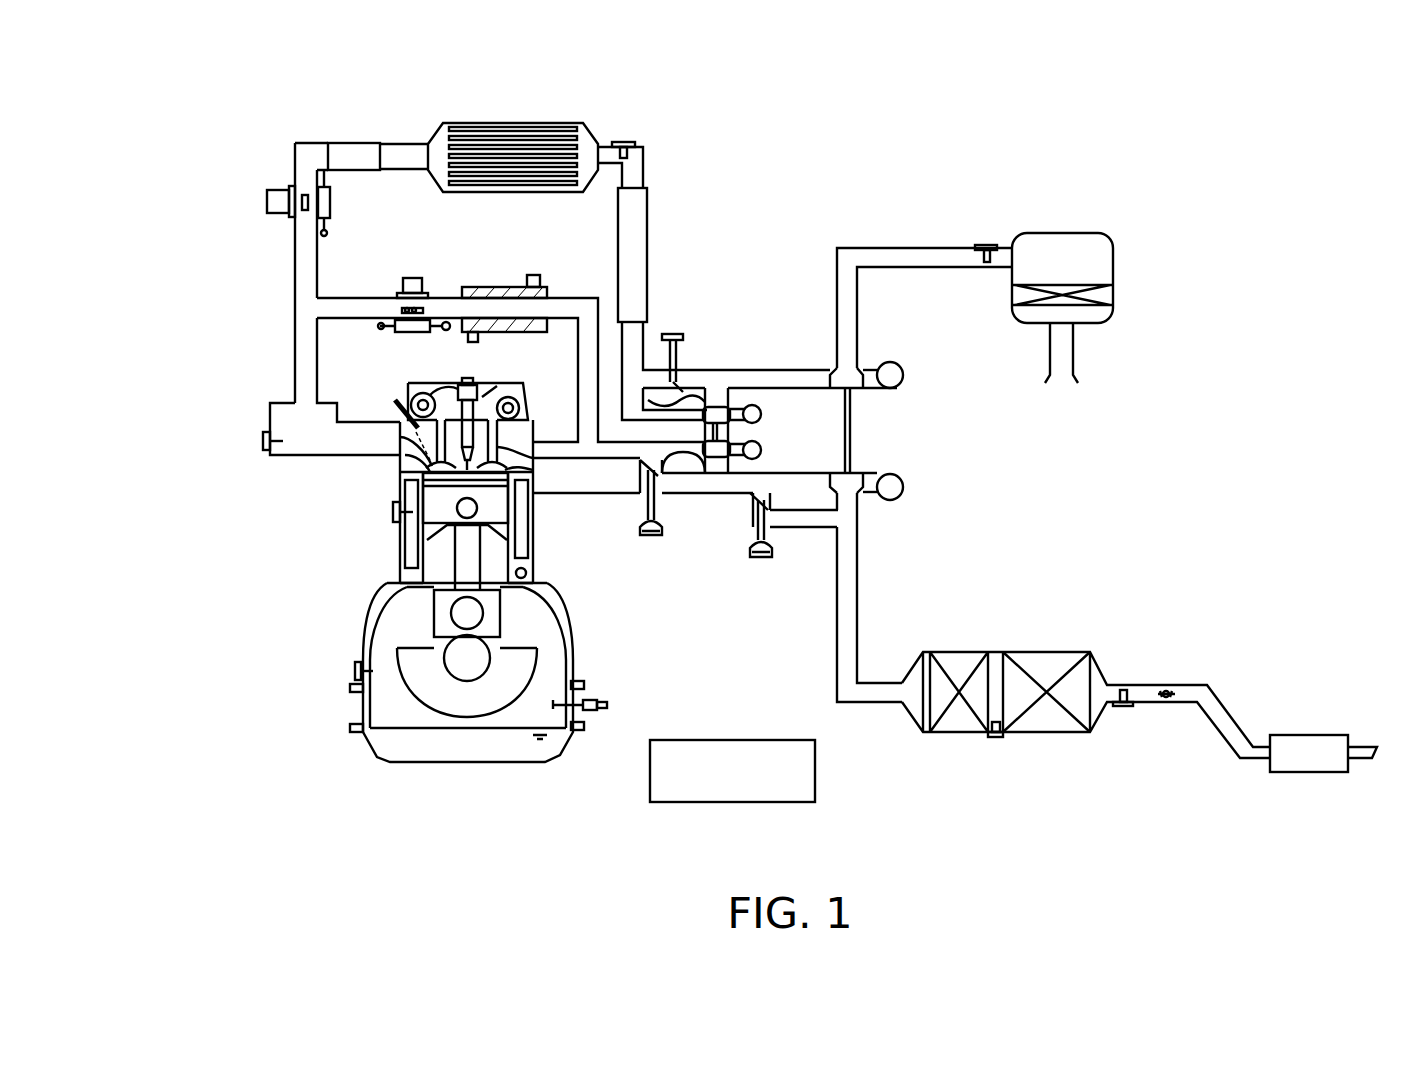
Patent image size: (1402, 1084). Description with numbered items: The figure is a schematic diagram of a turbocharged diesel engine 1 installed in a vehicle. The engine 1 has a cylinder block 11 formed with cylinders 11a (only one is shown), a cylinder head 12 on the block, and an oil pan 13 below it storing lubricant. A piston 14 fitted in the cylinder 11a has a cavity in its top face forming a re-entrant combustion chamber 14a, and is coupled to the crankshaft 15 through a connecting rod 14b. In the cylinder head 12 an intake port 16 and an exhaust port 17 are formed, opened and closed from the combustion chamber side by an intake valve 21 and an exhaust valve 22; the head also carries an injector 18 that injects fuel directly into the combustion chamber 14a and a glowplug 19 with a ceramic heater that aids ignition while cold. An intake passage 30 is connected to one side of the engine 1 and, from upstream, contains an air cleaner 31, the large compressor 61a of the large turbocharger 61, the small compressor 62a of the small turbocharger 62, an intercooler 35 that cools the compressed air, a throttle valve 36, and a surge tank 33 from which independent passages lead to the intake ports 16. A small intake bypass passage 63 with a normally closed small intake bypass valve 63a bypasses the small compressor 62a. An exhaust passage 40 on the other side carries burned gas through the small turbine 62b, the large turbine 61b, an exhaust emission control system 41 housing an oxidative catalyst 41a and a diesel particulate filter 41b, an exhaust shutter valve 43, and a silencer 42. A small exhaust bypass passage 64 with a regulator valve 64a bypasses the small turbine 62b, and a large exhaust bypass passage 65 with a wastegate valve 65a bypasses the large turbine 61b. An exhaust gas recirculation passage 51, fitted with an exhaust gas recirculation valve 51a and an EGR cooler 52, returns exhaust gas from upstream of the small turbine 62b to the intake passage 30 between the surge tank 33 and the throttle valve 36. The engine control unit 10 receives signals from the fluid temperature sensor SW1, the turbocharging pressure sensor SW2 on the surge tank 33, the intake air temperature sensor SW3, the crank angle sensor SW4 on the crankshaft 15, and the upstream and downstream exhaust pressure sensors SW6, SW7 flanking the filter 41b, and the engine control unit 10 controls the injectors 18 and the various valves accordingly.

The engine 1 is at (300, 732).
The engine control unit (ECU) 10 is at (684, 808).
The cylinder block 11 is at (535, 528).
The cylinder 11a is at (503, 556).
The cylinder head 12 is at (540, 428).
The oil pan 13 is at (478, 764).
The piston 14 is at (427, 540).
The combustion chamber 14a is at (495, 495).
The connecting rod 14b is at (452, 565).
The crankshaft 15 is at (455, 683).
The intake port 16 is at (400, 447).
The exhaust port 17 is at (527, 448).
The injector 18 is at (465, 378).
The glowplug 19 is at (398, 397).
The intake valve 21 is at (428, 473).
The exhaust valve 22 is at (510, 466).
The intake passage 30 is at (298, 330).
The air cleaner 31 is at (1080, 233).
The surge tank 33 is at (291, 458).
The intercooler 35 is at (506, 123).
The throttle valve 36 is at (304, 192).
The exhaust passage 40 is at (837, 646).
The exhaust emission control system 41 is at (1069, 596).
The oxidative catalyst 41a is at (965, 663).
The diesel particulate filter (DPF) 41b is at (1043, 663).
The silencer 42 is at (1310, 735).
The exhaust shutter valve 43 is at (1167, 690).
The exhaust gas recirculation passage 51 is at (515, 333).
The exhaust gas recirculation valve 51a is at (425, 310).
The EGR cooler 52 is at (497, 287).
The large turbocharger 61 is at (979, 398).
The large compressor 61a is at (858, 380).
The large turbine 61b is at (860, 484).
The small turbocharger 62 is at (845, 216).
The small compressor 62a is at (722, 412).
The small turbine 62b is at (735, 447).
The small intake bypass passage 63 is at (710, 373).
The small intake bypass valve 63a is at (685, 378).
The small exhaust bypass passage 64 is at (678, 492).
The regulator valve 64a is at (640, 474).
The large exhaust bypass passage 65 is at (805, 527).
The wastegate valve 65a is at (752, 500).
The fluid temperature sensor SW1 is at (393, 512).
The turbocharging pressure sensor SW2 is at (264, 441).
The intake air temperature sensor SW3 is at (987, 243).
The crank angle sensor SW4 is at (355, 671).
The upstream exhaust pressure sensor SW6 is at (997, 740).
The downstream exhaust pressure sensor SW7 is at (1125, 710).